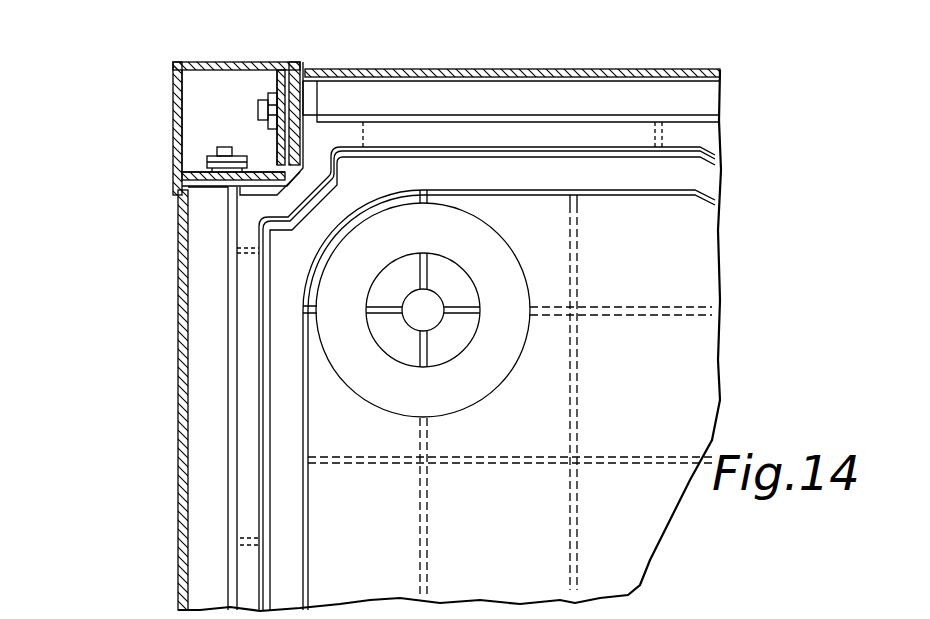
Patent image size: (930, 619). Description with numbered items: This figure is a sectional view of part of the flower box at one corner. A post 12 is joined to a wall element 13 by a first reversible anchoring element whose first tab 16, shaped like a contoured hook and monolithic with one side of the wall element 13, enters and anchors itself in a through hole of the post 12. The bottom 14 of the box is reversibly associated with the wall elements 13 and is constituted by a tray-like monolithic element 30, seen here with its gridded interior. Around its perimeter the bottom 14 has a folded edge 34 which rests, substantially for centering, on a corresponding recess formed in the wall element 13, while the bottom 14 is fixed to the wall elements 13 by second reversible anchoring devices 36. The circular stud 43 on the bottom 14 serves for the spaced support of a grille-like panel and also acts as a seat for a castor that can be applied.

The post 12 is at (166, 133).
The wall element 13 is at (493, 72).
The bottom 14 is at (228, 483).
The first tab 16 is at (262, 110).
The tray-like monolithic element 30 is at (658, 491).
The perimetric folded edge 34 is at (685, 147).
The second reversible anchoring device 36 is at (697, 612).
The stud 43 is at (503, 285).